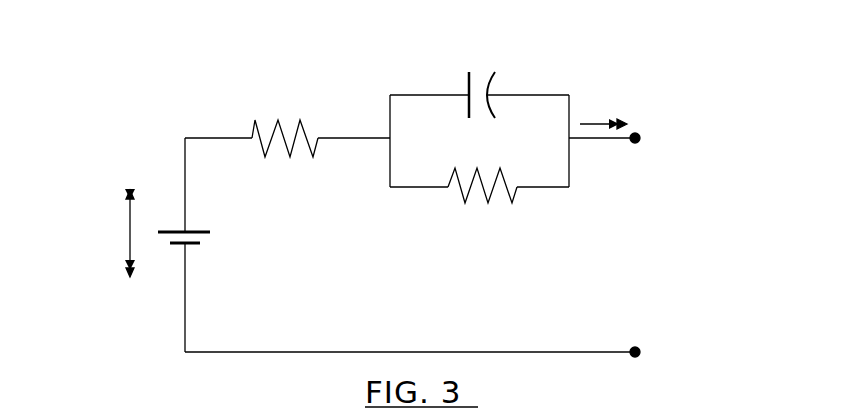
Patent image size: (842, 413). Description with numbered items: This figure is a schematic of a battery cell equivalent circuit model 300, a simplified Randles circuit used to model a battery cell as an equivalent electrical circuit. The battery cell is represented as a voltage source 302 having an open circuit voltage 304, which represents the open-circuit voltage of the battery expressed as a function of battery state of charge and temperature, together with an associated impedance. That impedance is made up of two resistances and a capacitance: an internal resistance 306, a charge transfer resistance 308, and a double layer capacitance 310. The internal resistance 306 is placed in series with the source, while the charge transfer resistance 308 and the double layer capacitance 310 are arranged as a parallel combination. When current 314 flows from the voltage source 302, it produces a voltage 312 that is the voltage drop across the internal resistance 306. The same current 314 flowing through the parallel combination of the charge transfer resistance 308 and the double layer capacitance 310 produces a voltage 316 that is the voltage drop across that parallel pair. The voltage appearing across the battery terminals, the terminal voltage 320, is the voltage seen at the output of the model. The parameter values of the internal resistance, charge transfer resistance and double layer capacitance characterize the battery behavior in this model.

The battery cell equivalent circuit model 300 is at (130, 86).
The voltage source 302 is at (195, 245).
The open circuit voltage 304 is at (130, 232).
The internal resistance 306 is at (250, 135).
The charge transfer resistance 308 is at (458, 192).
The double layer capacitance 310 is at (488, 83).
The voltage V0 312 is at (288, 213).
The current 314 is at (591, 122).
The voltage V1 316 is at (485, 272).
The terminal voltage 320 is at (673, 258).